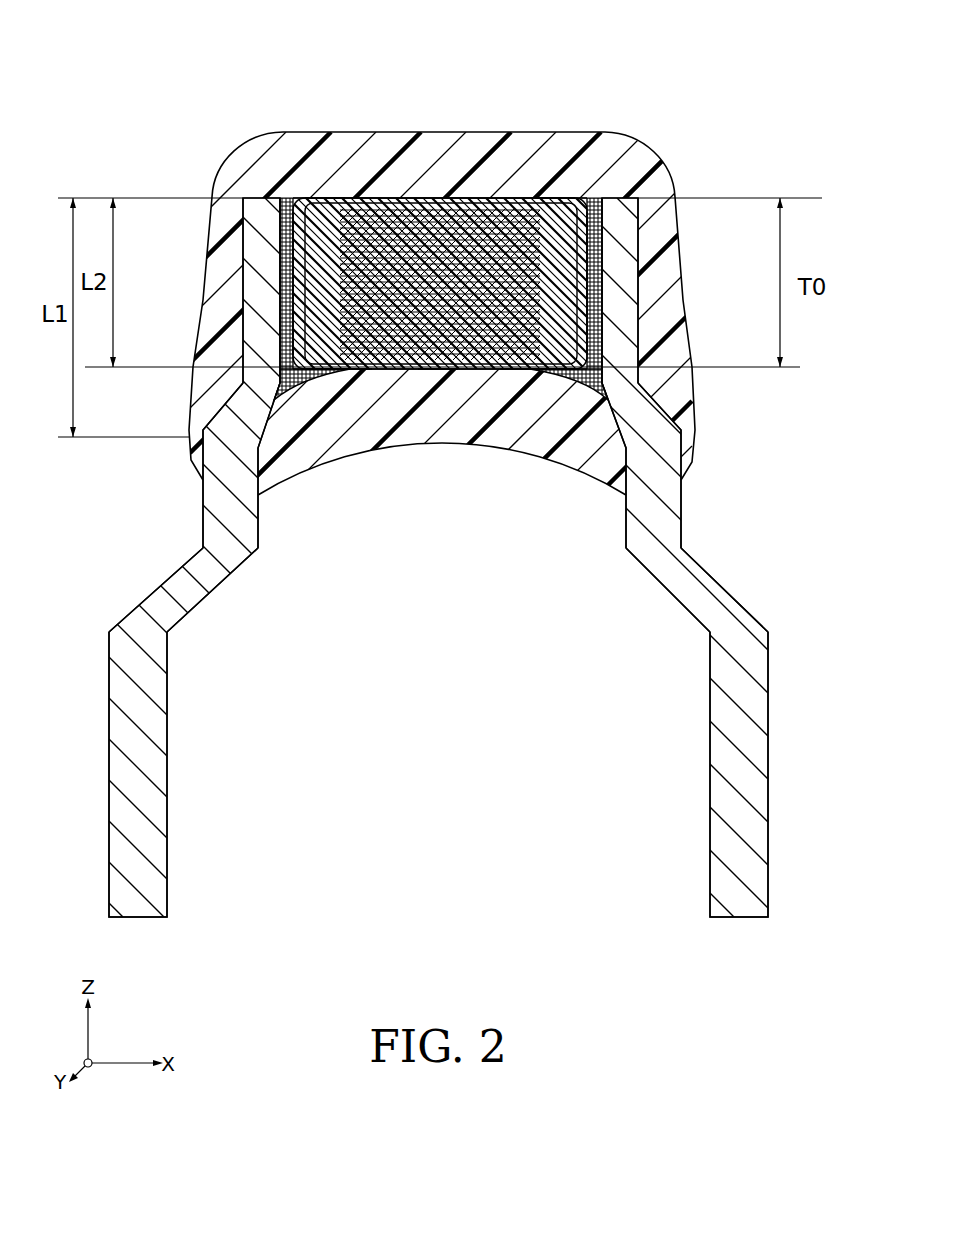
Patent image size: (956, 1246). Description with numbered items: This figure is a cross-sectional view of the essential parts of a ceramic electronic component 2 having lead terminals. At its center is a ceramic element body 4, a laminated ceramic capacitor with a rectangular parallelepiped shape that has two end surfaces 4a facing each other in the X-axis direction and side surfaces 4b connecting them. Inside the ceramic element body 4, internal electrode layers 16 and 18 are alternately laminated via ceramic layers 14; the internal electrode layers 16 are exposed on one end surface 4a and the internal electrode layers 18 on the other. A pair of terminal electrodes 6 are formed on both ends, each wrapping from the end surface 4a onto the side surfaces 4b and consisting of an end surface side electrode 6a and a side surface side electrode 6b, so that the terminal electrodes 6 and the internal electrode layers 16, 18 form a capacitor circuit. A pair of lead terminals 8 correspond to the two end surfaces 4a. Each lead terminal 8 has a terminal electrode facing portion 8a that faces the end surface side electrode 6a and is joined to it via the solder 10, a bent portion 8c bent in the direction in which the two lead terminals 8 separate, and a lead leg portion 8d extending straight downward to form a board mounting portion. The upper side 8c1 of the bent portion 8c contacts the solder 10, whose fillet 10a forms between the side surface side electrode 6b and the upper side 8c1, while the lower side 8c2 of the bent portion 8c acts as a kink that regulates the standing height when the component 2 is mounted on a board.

The ceramic electronic component 2 is at (636, 56).
The ceramic element body 4 is at (450, 291).
The end surface 4a is at (250, 218).
The side surface 4b is at (430, 198).
The terminal electrode 6 is at (420, 228).
The end surface side electrode 6a is at (262, 300).
The side surface side electrode 6b is at (333, 198).
The lead terminal 8 is at (176, 644).
The terminal electrode facing portion 8a is at (263, 262).
The bent portion 8c is at (442, 507).
The upper side of bent portion 8c1 is at (225, 478).
The lower side of bent portion 8c2 is at (224, 557).
The lead leg portion 8d is at (128, 787).
The solder 10 is at (421, 322).
The fillet 10a is at (298, 474).
The ceramic layer 14 is at (522, 402).
The internal electrode layer 16 is at (346, 403).
The internal electrode layer 18 is at (437, 401).